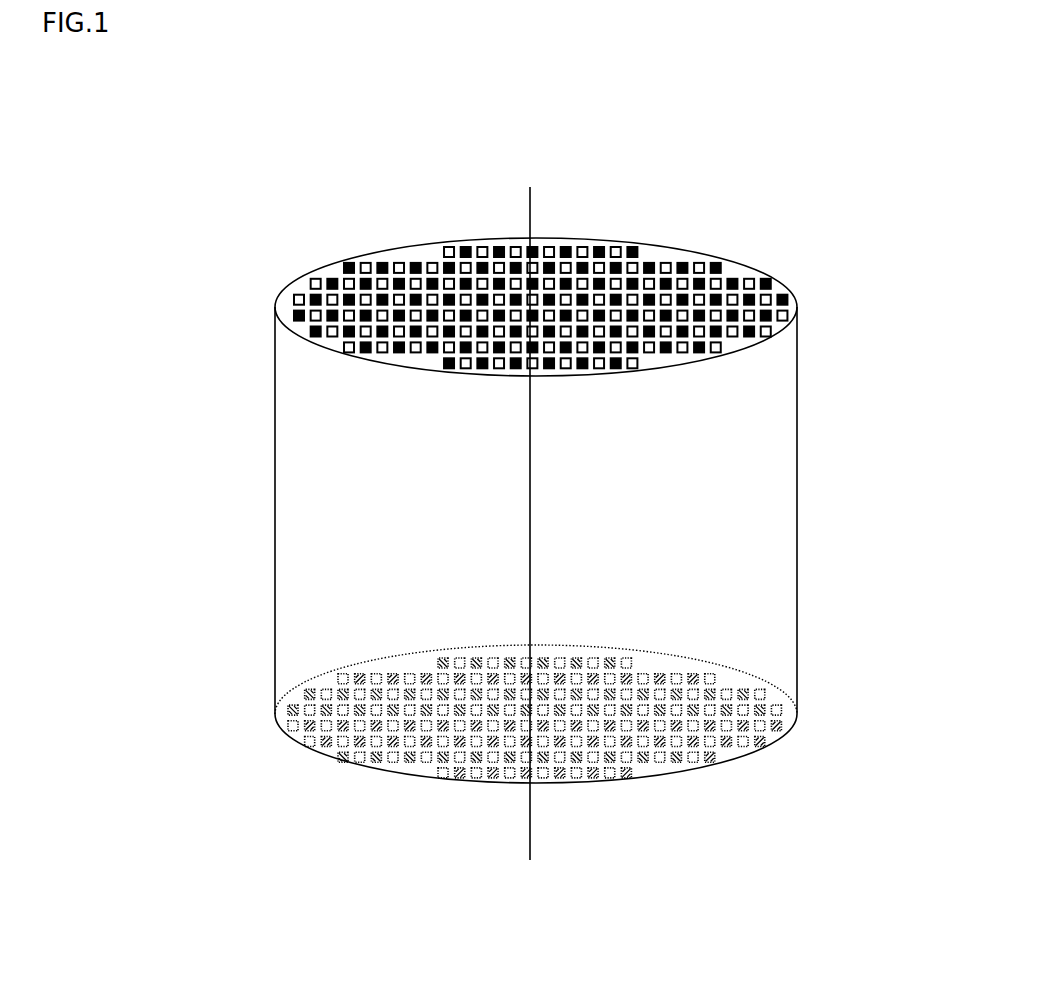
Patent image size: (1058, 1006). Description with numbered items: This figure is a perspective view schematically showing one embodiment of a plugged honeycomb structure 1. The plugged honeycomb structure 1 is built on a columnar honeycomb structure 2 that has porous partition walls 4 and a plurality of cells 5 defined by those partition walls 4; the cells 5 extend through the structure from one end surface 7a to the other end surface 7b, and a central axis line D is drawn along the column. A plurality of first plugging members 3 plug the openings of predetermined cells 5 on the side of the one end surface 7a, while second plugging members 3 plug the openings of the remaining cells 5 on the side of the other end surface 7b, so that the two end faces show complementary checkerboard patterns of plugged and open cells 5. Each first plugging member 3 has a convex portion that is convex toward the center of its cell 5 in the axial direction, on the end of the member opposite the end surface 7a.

The plugged honeycomb structure 1 is at (573, 122).
The honeycomb structure 2 is at (735, 502).
The plugging members 3 is at (330, 280).
The partition walls 4 is at (442, 338).
The cells 5 is at (768, 278).
The one end surface 7a is at (280, 279).
The other end surface 7b is at (293, 784).
The central axis direction D is at (533, 206).